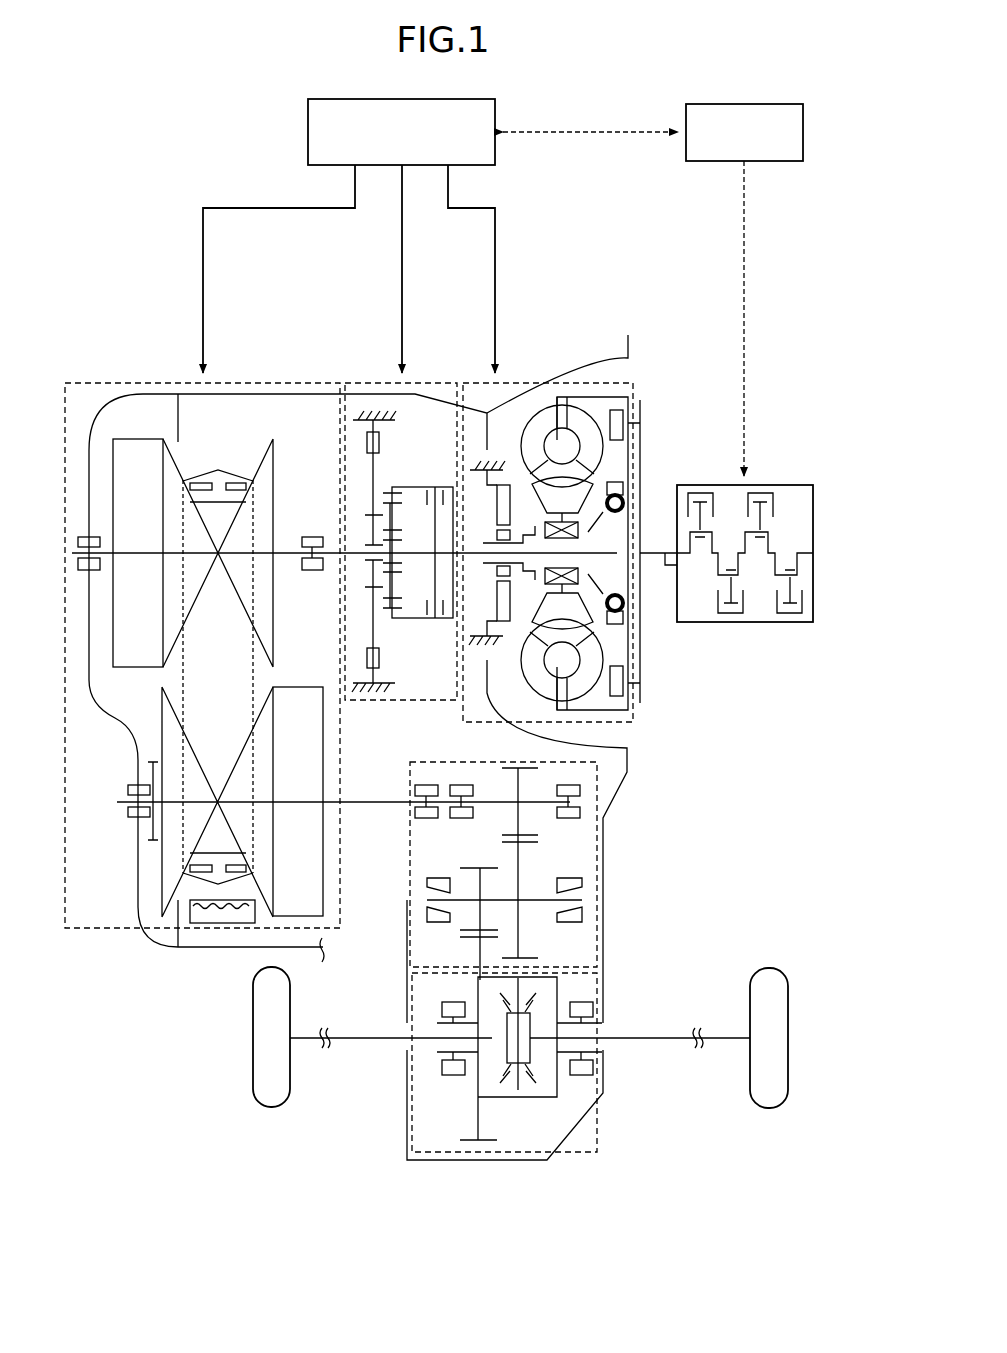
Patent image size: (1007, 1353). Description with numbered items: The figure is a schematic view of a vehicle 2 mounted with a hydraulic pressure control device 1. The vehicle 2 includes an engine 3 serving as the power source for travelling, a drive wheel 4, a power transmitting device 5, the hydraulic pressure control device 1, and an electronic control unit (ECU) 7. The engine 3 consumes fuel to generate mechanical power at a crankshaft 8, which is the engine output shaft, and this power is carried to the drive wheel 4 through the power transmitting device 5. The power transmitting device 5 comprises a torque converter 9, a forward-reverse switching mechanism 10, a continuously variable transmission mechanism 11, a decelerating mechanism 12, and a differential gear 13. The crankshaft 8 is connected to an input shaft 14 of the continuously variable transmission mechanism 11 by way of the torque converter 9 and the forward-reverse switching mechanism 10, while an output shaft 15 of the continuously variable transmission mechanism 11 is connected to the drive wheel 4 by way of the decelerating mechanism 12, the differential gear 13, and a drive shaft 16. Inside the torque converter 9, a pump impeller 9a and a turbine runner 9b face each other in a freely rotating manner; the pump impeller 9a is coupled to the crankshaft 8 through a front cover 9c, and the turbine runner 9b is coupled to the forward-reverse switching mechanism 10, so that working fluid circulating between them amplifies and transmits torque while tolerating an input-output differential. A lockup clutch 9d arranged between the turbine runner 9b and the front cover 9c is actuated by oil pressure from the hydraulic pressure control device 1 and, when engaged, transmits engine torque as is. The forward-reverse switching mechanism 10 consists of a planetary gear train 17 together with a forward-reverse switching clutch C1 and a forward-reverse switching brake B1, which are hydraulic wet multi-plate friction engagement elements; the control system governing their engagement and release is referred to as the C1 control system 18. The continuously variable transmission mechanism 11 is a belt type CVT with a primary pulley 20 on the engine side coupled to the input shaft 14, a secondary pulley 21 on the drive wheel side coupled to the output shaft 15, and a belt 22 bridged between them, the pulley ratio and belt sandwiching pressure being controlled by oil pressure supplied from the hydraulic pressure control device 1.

The hydraulic pressure control device 1 is at (449, 99).
The vehicle 2 is at (117, 226).
The engine 3 is at (779, 483).
The drive wheel 4 is at (271, 1108).
The power transmitting device 5 is at (83, 358).
The electronic control unit (ECU) 7 is at (776, 104).
The crankshaft 8 is at (660, 548).
The torque converter 9 is at (572, 534).
The pump impeller 9a is at (536, 440).
The turbine runner 9b is at (578, 420).
The front cover 9c is at (633, 650).
The lockup clutch 9d is at (623, 690).
The forward-reverse switching mechanism 10 is at (402, 545).
The continuously variable transmission mechanism 11 is at (344, 625).
The decelerating mechanism 12 is at (598, 845).
The differential gear 13 is at (600, 990).
The input shaft 14 is at (325, 560).
The output shaft 15 is at (380, 802).
The drive shaft 16 is at (372, 1037).
The planetary gear train 17 is at (418, 486).
The C1 control system 18 is at (405, 586).
The primary pulley 20 is at (205, 466).
The secondary pulley 21 is at (216, 763).
The belt 22 is at (235, 466).
The forward-reverse switching brake B1 is at (379, 657).
The forward-reverse switching clutch C1 is at (420, 617).